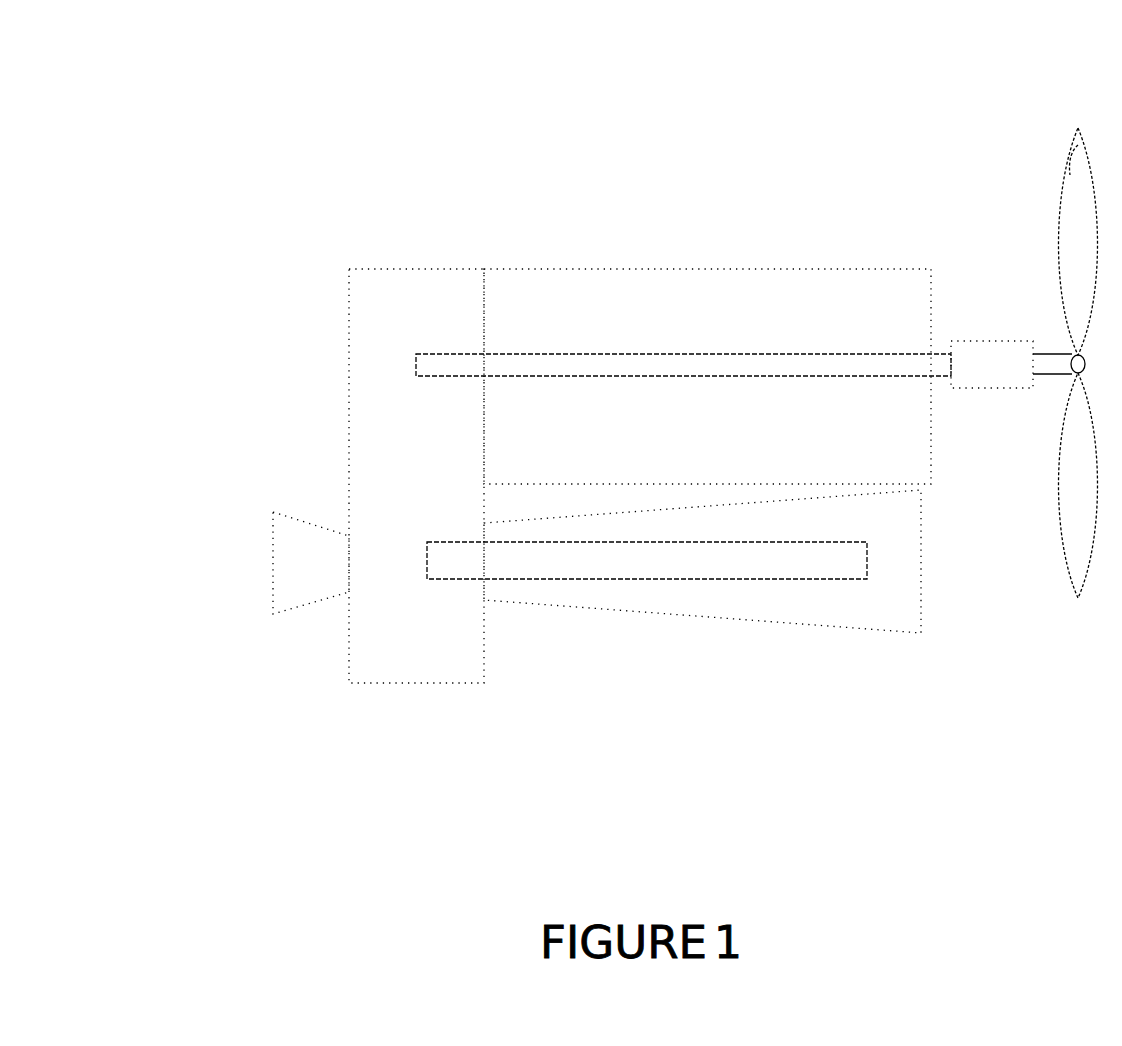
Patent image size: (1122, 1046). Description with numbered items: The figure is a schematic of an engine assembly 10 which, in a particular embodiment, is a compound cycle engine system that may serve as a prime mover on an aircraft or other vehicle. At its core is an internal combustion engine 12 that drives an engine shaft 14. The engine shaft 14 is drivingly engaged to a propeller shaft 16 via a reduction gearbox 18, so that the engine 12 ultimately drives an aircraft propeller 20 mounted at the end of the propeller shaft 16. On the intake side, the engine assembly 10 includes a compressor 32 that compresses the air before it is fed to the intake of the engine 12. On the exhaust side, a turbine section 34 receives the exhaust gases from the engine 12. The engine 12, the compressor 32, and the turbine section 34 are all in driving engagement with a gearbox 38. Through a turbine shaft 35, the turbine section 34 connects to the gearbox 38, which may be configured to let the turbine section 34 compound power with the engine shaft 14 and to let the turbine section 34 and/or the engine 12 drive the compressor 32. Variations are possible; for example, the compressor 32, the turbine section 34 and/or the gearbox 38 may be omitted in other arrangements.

The engine assembly 10 is at (272, 225).
The internal combustion engine 12 is at (840, 296).
The engine shaft 14 is at (628, 362).
The propeller shaft 16 is at (1044, 366).
The reduction gearbox 18 is at (1003, 375).
The aircraft propeller 20 is at (1082, 128).
The compressor 32 is at (285, 558).
The turbine section 34 is at (789, 594).
The turbine shaft 35 is at (662, 562).
The gearbox 38 is at (390, 627).